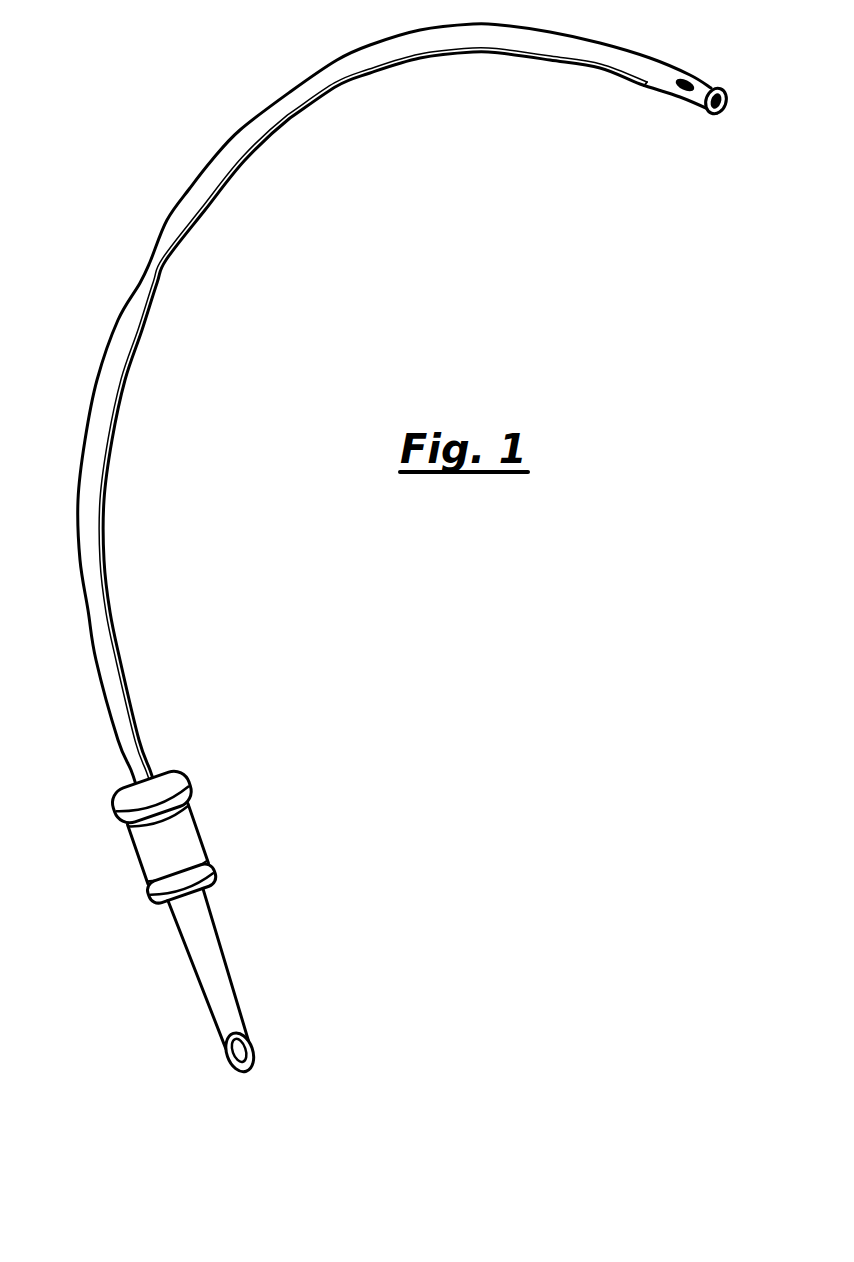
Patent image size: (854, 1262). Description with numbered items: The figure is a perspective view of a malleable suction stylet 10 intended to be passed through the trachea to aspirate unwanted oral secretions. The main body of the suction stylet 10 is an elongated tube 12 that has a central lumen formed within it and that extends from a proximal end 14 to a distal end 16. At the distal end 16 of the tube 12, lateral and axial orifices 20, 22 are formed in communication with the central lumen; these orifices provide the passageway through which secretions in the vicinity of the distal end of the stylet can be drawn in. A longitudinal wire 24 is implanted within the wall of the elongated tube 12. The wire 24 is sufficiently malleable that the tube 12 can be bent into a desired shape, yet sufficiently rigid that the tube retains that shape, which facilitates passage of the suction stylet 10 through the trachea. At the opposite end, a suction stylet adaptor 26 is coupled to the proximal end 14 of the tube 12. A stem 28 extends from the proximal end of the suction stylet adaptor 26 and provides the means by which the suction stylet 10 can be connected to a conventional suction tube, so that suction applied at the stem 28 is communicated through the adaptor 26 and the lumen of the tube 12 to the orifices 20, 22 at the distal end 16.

The suction stylet 10 is at (188, 70).
The elongated tube 12 is at (137, 282).
The proximal end 14 is at (152, 766).
The distal end 16 is at (717, 92).
The lateral orifice 20 is at (683, 90).
The axial orifice 22 is at (723, 106).
The longitudinal wire 24 is at (109, 611).
The suction stylet adaptor 26 is at (198, 832).
The stem 28 is at (222, 1000).